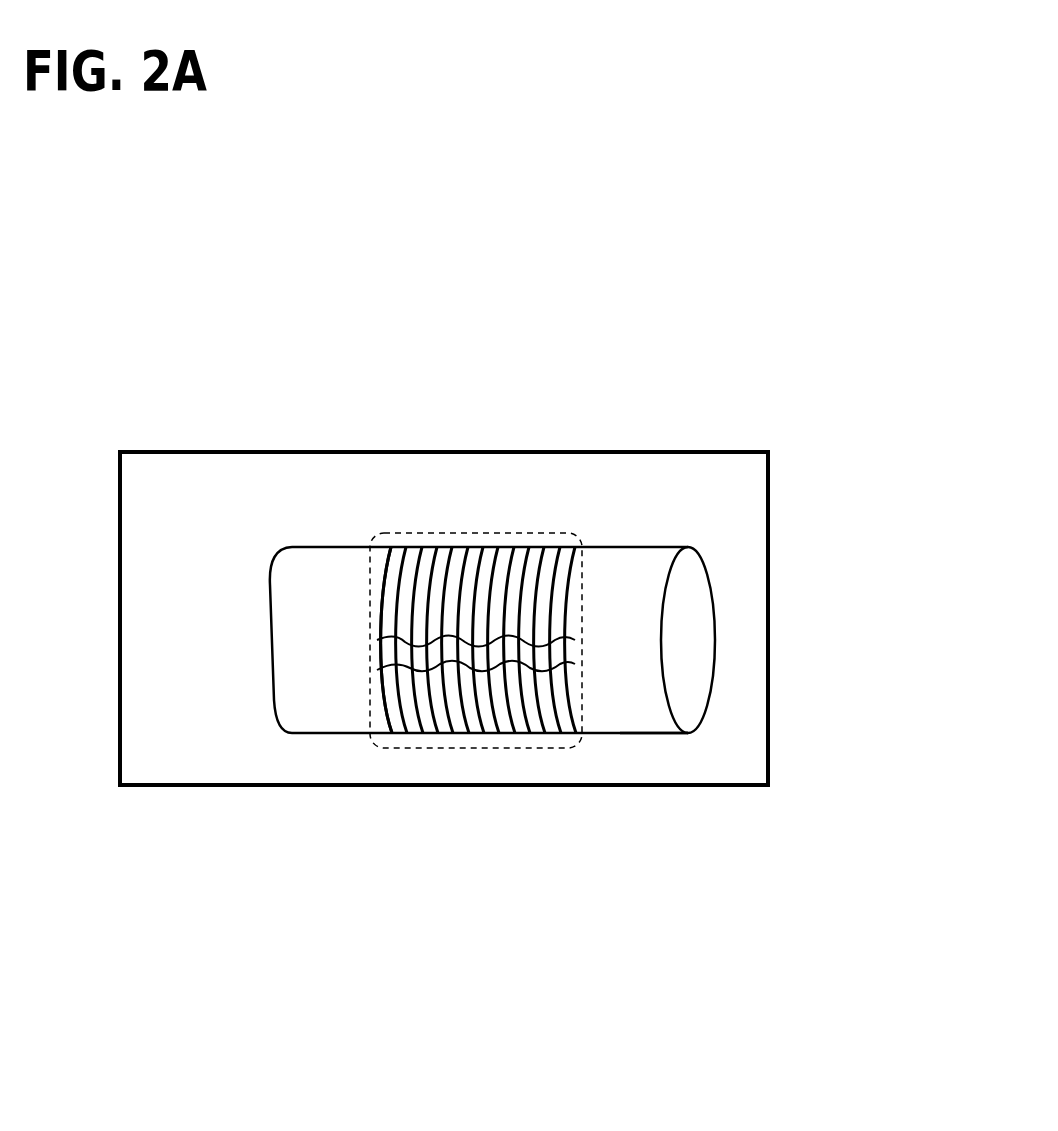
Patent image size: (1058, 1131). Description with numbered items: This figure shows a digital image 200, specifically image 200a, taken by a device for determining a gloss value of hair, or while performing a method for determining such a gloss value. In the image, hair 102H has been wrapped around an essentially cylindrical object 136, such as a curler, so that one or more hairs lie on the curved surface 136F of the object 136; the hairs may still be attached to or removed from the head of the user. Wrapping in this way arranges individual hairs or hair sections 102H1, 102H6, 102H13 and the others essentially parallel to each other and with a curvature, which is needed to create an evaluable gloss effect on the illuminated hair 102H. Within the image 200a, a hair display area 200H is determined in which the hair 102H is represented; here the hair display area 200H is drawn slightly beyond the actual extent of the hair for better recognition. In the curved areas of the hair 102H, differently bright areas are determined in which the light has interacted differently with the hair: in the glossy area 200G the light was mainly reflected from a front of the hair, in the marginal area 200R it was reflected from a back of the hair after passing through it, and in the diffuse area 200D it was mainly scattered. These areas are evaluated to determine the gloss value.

The digital image 200 is at (521, 537).
The digital image 200a is at (444, 618).
The hair display area 200H is at (590, 536).
The diffuse area 200D is at (377, 575).
The glossy area 200G is at (377, 640).
The marginal area 200R is at (377, 670).
The cylindrical object 136 is at (717, 677).
The curved surface 136F is at (630, 749).
The hair 102H is at (417, 765).
The hair section 102H1 is at (331, 696).
The hair section 102H6 is at (455, 705).
The hair section 102H13 is at (530, 705).